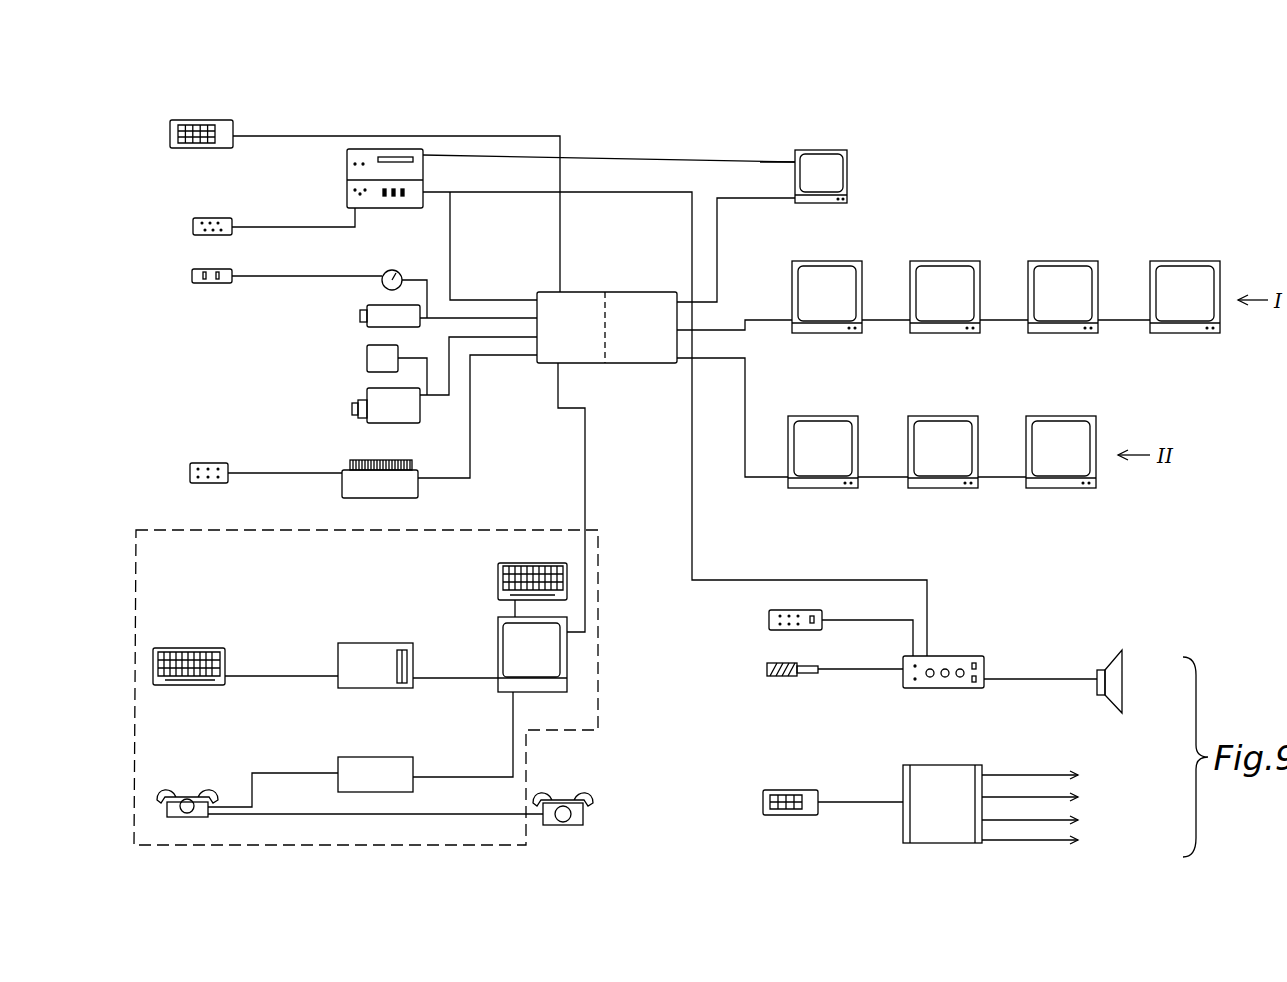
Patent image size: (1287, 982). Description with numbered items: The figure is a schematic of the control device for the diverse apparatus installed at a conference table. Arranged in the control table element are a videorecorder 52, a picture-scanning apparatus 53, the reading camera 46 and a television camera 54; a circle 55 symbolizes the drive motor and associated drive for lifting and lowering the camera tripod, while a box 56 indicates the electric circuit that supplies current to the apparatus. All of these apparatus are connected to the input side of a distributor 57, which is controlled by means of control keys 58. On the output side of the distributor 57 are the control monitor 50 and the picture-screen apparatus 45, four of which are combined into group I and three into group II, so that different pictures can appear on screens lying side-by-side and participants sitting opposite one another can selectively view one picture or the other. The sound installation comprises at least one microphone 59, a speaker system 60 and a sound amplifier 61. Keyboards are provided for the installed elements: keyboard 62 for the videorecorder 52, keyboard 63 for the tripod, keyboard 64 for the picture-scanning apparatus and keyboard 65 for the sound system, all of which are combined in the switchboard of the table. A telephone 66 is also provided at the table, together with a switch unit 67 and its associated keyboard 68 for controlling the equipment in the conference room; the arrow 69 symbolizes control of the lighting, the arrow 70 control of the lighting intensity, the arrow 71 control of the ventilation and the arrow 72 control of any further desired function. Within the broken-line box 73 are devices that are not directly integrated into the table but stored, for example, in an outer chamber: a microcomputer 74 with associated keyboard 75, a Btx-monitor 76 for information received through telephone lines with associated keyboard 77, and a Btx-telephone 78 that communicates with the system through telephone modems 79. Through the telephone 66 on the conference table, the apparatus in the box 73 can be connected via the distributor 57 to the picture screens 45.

The picture-screen apparatus 45 is at (847, 280).
The reading camera 46 is at (372, 310).
The control monitor 50 is at (828, 162).
The videorecorder 52 is at (355, 158).
The picture-scanning apparatus 53 is at (352, 470).
The television camera 54 is at (390, 401).
The drive motor 55 is at (397, 272).
The electric circuit 56 is at (380, 362).
The distributor 57 is at (594, 293).
The control keys 58 is at (215, 128).
The microphone 59 is at (776, 680).
The speaker system 60 is at (1115, 690).
The sound amplifier 61 is at (962, 656).
The keyboard 62 is at (210, 218).
The keyboard 63 is at (208, 283).
The keyboard 64 is at (210, 463).
The keyboard 65 is at (769, 624).
The telephone 66 is at (565, 805).
The switch unit 67 is at (945, 778).
The keyboard 68 is at (768, 795).
The arrow 69 is at (1030, 774).
The arrow 70 is at (1048, 796).
The arrow 71 is at (1055, 822).
The arrow 72 is at (1040, 841).
The box 73 is at (150, 528).
The microcomputer 74 is at (392, 658).
The keyboard 75 is at (201, 652).
The monitor 76 is at (526, 657).
The keyboard 77 is at (530, 575).
The Btx-telephone 78 is at (212, 798).
The telephone modems 79 is at (367, 770).